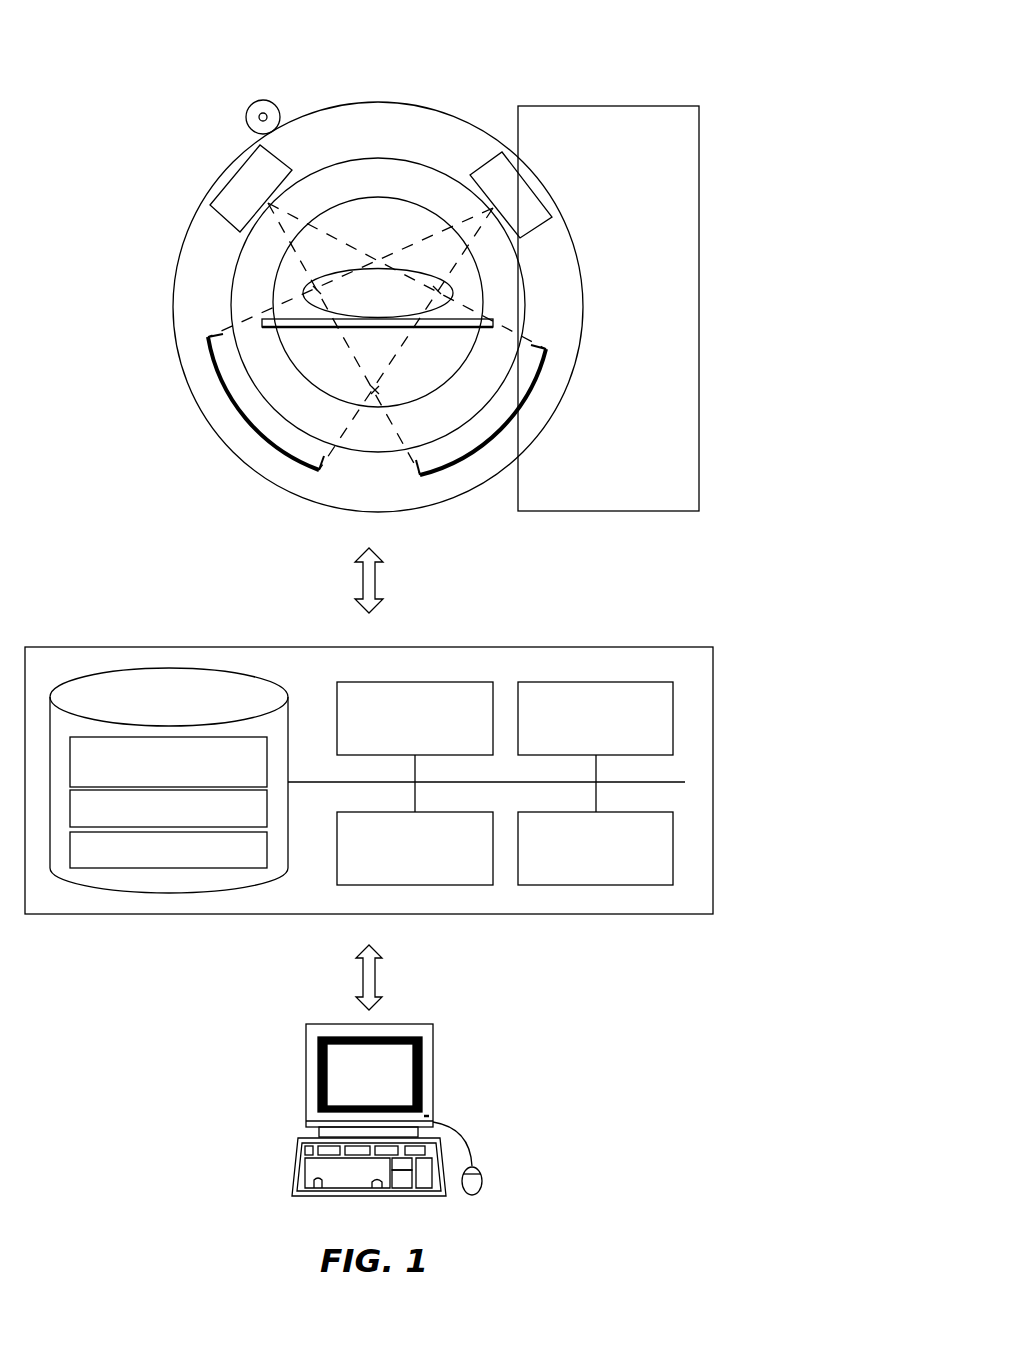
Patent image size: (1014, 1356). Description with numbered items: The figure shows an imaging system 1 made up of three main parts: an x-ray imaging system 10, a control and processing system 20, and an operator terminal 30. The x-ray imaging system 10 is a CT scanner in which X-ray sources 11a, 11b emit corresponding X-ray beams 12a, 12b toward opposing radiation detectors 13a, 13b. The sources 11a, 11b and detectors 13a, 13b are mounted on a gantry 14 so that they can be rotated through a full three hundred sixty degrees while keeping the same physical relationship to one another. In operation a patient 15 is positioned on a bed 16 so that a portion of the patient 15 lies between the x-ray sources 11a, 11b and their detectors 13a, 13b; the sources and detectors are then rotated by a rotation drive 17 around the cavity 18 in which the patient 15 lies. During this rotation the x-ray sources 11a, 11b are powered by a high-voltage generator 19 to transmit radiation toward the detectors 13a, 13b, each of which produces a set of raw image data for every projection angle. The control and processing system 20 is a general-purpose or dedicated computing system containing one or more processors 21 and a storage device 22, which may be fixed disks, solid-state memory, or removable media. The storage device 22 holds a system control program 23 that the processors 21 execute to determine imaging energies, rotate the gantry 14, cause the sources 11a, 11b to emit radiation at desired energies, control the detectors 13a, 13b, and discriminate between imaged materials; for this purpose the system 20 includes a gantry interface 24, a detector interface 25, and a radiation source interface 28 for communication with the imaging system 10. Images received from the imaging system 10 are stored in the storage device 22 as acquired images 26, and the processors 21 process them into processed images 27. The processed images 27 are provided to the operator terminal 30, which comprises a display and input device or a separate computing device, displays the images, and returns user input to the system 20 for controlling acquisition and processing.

The system 1 is at (50, 35).
The x-ray imaging system 10 is at (270, 66).
The X-ray source 11a is at (222, 219).
The X-ray source 11b is at (538, 223).
The X-ray beam 12a is at (330, 240).
The X-ray beam 12b is at (418, 240).
The radiation detector 13a is at (434, 474).
The radiation detector 13b is at (306, 472).
The gantry 14 is at (432, 111).
The patient 15 is at (408, 270).
The bed 16 is at (432, 328).
The rotation drive 17 is at (246, 116).
The cavity 18 is at (283, 277).
The high-voltage generator 19 is at (699, 143).
The control and processing system 20 is at (545, 648).
The processors 21 is at (450, 812).
The storage device 22 is at (260, 686).
The system control program 23 is at (70, 762).
The gantry interface 24 is at (448, 682).
The detector interface 25 is at (626, 812).
The acquired images 26 is at (70, 803).
The processed images 27 is at (70, 848).
The radiation source interface 28 is at (633, 682).
The operator terminal 30 is at (474, 1089).